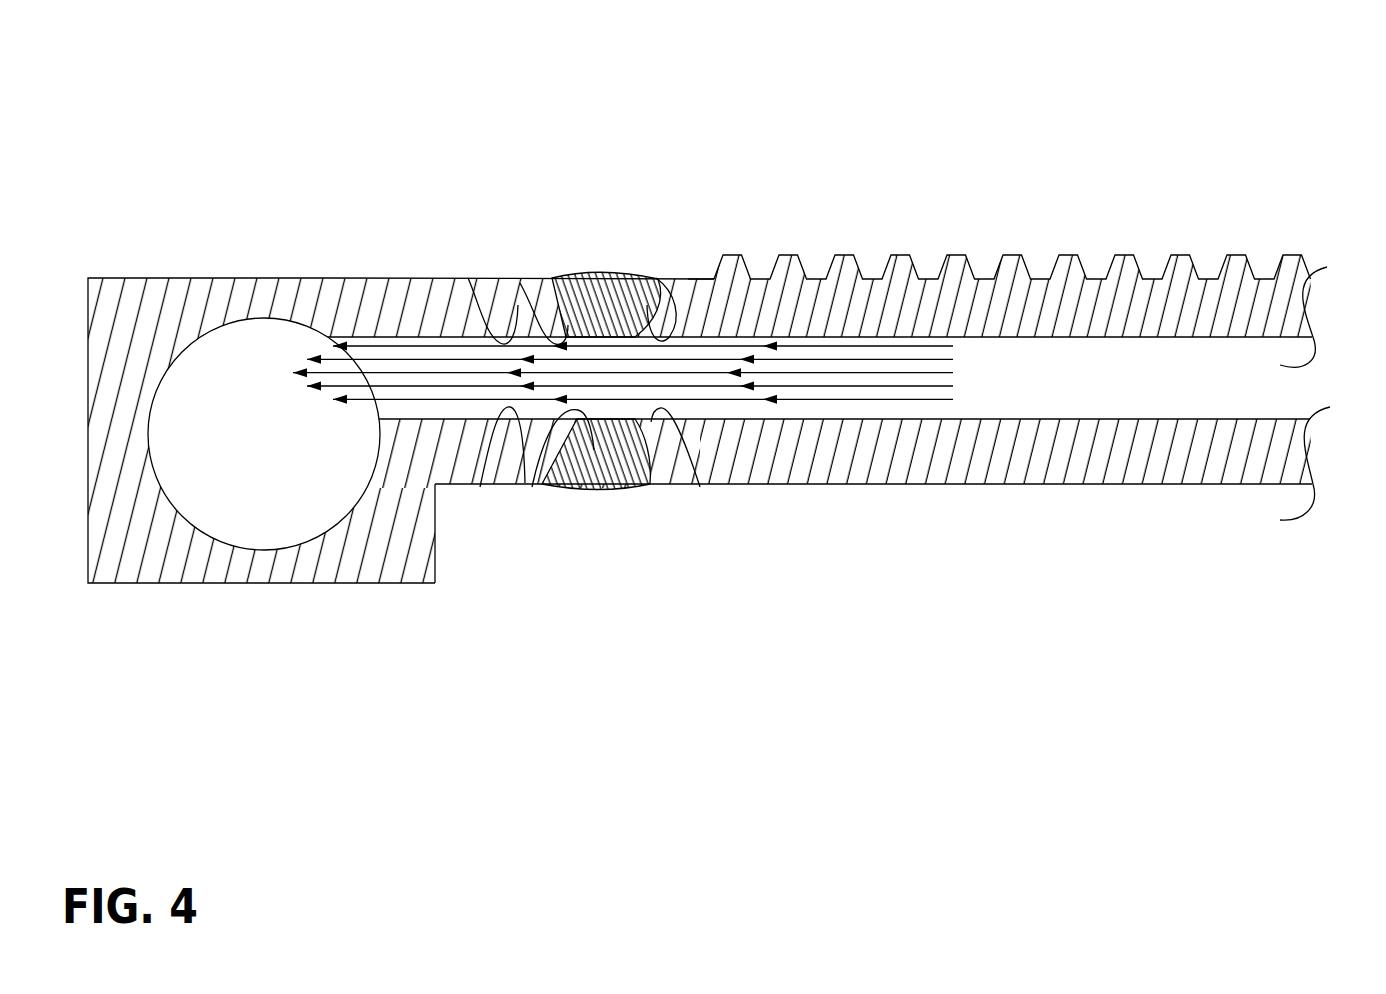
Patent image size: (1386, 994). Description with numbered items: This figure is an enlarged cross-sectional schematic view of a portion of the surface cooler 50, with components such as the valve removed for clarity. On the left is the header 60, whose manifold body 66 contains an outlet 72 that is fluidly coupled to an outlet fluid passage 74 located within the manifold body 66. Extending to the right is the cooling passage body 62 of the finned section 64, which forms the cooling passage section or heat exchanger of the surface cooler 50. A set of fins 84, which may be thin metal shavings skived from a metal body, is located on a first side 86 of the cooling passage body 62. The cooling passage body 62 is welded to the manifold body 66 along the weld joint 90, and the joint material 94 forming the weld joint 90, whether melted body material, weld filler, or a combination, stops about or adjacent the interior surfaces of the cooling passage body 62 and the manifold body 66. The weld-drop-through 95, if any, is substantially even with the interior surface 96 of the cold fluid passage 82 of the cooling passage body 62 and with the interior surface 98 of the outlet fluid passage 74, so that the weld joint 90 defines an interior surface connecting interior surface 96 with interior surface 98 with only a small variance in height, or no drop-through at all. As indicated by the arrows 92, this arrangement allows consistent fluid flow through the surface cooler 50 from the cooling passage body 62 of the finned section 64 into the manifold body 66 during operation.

The surface cooler 50 is at (279, 50).
The header 60 is at (375, 278).
The cooling passage body 62 is at (1293, 307).
The finned section 64 is at (705, 278).
The manifold body 66 is at (283, 277).
The outlet 72 is at (215, 365).
The outlet fluid passage 74 is at (423, 405).
The cold fluid passage 82 is at (1082, 380).
The fins 84 is at (1123, 255).
The first side 86 is at (688, 282).
The weld joint 90 is at (595, 272).
The arrows 92 is at (823, 399).
The joint material 94 is at (558, 285).
The weld-drop-through 95 is at (520, 283).
The interior surface of the cold fluid passage 96 is at (656, 278).
The interior surface of the outlet fluid passage 98 is at (468, 278).